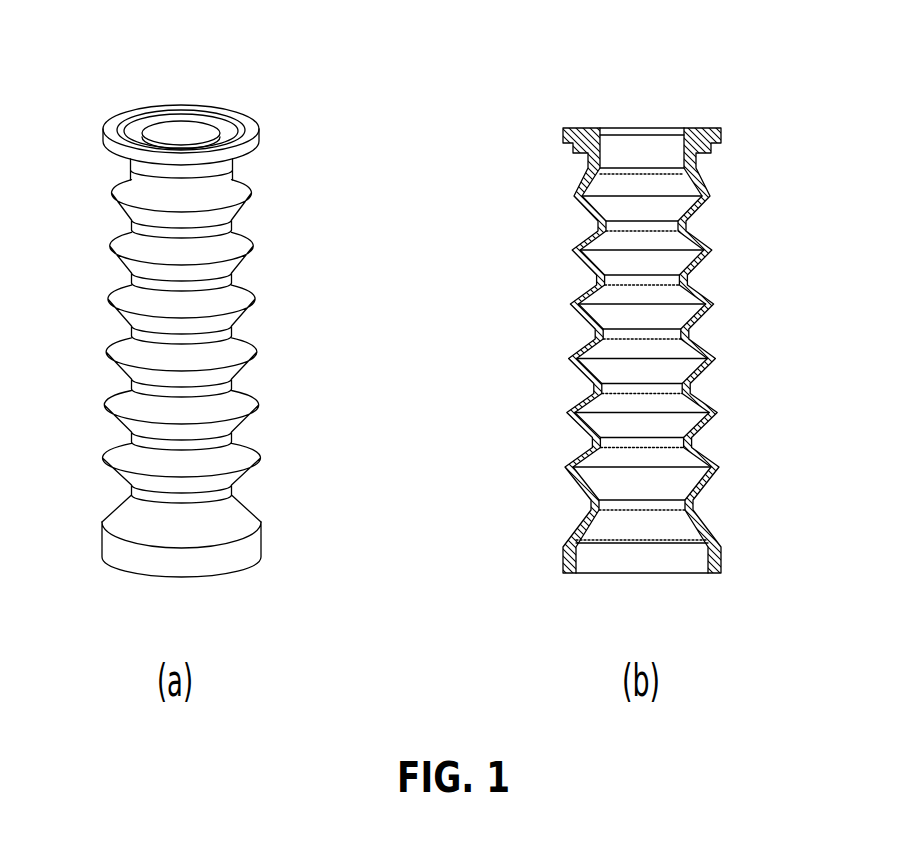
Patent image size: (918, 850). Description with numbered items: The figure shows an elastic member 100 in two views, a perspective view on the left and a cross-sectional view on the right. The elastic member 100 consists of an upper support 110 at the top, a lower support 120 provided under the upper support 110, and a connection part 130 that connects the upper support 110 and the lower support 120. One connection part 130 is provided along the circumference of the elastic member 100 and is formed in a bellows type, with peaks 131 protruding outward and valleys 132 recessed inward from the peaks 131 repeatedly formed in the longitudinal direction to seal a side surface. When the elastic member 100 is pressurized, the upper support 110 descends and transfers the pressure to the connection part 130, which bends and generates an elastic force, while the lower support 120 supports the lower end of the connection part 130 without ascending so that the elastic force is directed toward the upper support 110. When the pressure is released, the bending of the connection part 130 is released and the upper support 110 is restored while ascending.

The elastic member 100 is at (252, 90).
The upper support 110 is at (259, 128).
The lower support 120 is at (262, 535).
The connection part 130 is at (268, 522).
The peaks 131 is at (572, 250).
The valleys 132 is at (586, 283).